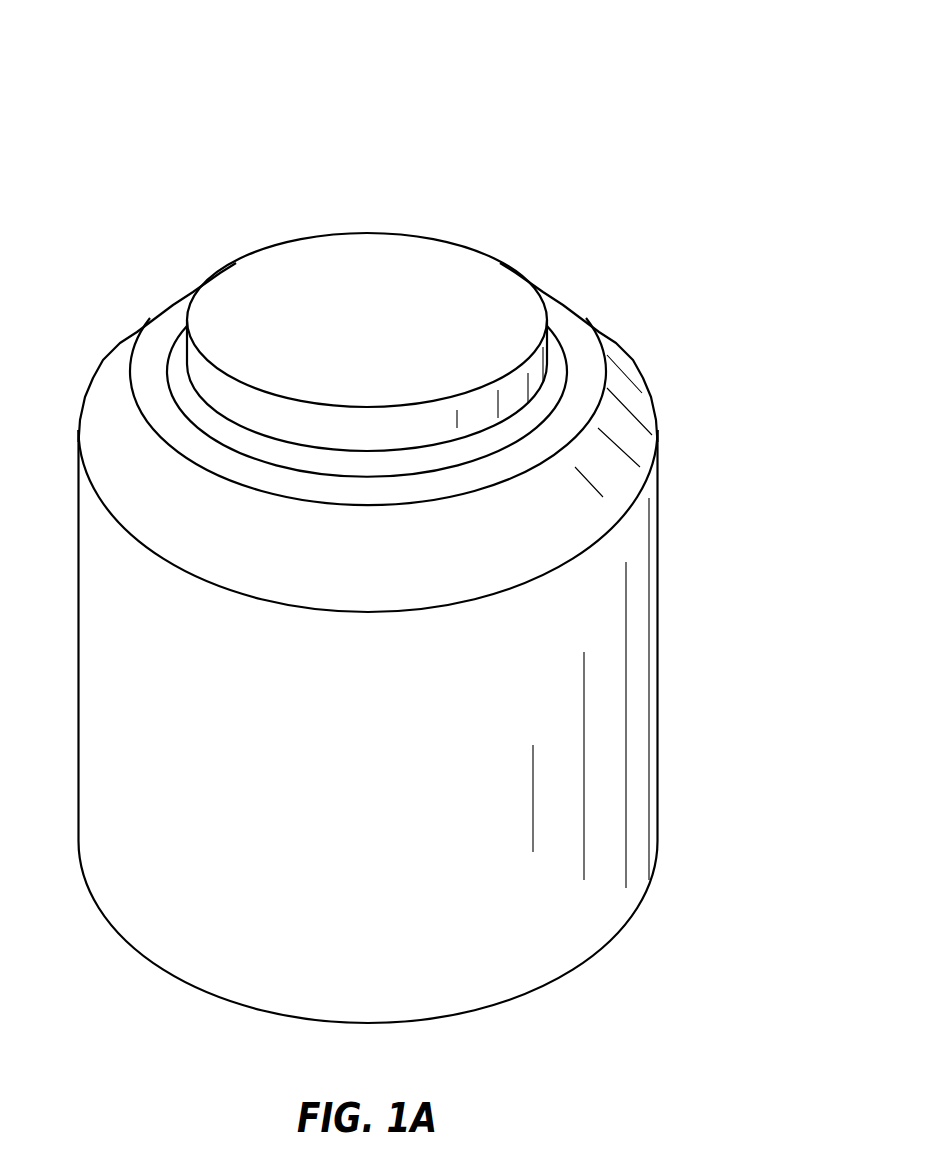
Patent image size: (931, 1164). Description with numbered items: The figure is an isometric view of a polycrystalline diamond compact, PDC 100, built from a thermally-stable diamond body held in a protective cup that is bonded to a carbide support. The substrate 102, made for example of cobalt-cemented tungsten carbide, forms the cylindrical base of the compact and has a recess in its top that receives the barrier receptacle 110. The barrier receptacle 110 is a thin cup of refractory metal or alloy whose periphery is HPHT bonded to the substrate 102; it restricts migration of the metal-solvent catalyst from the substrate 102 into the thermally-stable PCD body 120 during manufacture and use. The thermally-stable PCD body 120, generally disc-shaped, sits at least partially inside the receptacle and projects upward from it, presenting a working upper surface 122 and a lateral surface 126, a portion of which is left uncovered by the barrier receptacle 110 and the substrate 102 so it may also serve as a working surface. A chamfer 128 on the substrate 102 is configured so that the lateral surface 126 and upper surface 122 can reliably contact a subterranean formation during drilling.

The PDC 100 is at (678, 118).
The substrate 102 is at (658, 689).
The barrier receptacle 110 is at (560, 374).
The thermally-stable PCD body 120 is at (472, 247).
The working upper surface 122 is at (392, 328).
The lateral surface 126 is at (555, 382).
The chamfer 128 is at (632, 400).